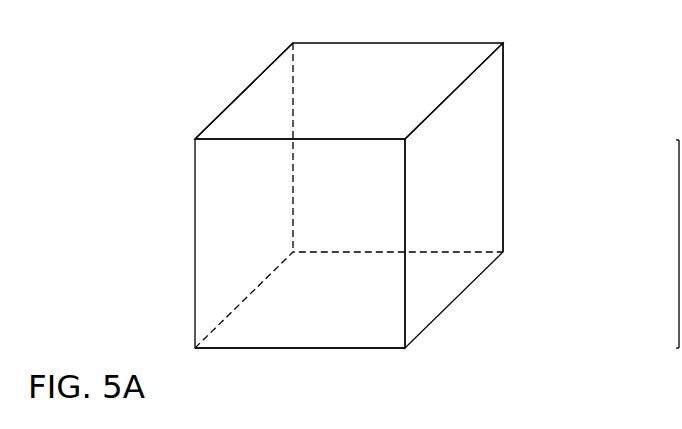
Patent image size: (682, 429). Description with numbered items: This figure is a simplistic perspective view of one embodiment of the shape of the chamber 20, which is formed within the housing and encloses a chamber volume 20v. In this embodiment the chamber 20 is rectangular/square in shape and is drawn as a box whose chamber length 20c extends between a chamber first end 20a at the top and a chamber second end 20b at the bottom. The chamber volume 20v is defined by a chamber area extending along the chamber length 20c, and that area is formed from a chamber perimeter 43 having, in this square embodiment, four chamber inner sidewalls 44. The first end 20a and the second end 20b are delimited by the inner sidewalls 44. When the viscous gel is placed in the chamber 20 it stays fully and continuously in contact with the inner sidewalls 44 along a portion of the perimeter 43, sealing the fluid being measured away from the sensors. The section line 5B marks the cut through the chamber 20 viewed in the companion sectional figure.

The chamber 20 is at (541, 66).
The chamber volume 20v is at (394, 204).
The chamber first end 20a is at (349, 72).
The chamber second end 20b is at (303, 315).
The chamber length 20c is at (548, 147).
The chamber perimeter 43 is at (244, 91).
The chamber inner sidewall 44 is at (494, 195).
The section line 5B is at (262, 229).